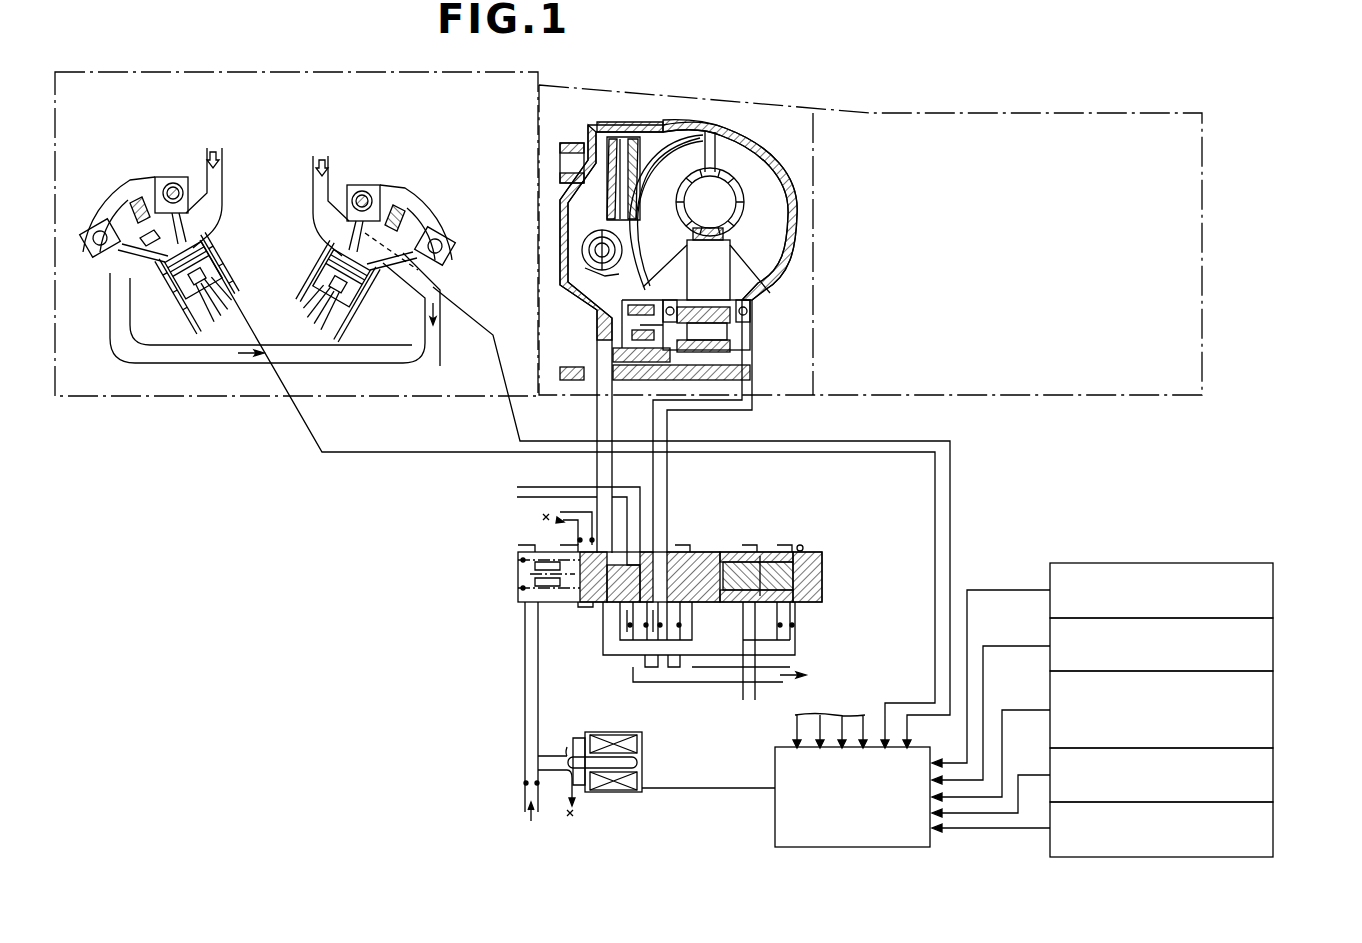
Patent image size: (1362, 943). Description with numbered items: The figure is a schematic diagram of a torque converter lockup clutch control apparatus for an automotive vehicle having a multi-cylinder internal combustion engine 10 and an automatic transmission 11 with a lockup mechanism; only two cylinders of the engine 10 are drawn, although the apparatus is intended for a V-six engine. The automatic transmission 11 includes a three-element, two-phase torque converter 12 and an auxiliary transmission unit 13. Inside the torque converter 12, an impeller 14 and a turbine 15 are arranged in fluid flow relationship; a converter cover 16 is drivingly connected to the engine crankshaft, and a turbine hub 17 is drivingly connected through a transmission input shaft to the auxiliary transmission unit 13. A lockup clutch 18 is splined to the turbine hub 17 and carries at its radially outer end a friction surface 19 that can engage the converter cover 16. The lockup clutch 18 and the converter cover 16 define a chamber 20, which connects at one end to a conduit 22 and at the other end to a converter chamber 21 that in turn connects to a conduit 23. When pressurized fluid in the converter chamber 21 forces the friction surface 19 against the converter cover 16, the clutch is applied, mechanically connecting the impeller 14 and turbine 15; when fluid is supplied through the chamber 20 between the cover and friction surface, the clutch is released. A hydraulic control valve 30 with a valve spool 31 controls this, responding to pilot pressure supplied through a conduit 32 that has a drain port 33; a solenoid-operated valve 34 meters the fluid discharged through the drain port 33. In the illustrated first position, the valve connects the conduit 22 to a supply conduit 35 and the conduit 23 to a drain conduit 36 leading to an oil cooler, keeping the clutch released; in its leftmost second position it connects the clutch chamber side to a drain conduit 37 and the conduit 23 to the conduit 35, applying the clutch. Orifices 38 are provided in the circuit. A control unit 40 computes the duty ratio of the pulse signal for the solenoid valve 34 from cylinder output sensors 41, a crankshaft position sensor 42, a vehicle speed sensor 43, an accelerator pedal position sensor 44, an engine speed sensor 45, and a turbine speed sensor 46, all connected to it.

The internal combustion engine 10 is at (338, 72).
The automatic transmission 11 is at (950, 80).
The torque converter 12 is at (758, 126).
The auxiliary transmission unit 13 is at (1113, 110).
The impeller 14 is at (776, 240).
The turbine 15 is at (668, 210).
The converter cover 16 is at (588, 126).
The turbine hub 17 is at (660, 365).
The lockup clutch 18 is at (558, 250).
The friction surface 19 is at (608, 130).
The chamber 20 is at (603, 330).
The converter chamber 21 is at (727, 202).
The conduit 22 is at (595, 415).
The conduit 23 is at (672, 488).
The hydraulic control valve 30 is at (770, 522).
The valve spool 31 is at (703, 550).
The conduit 32 is at (524, 664).
The drain port 33 is at (567, 750).
The solenoid-operated valve 34 is at (647, 762).
The conduit 35 is at (515, 490).
The drain conduit 36 is at (726, 680).
The drain conduit 37 is at (563, 523).
The orifices 38 is at (644, 658).
The control unit 40 is at (773, 813).
The cylinder output sensors 41 is at (162, 235).
The crankshaft position sensor 42 is at (1275, 594).
The vehicle speed sensor 43 is at (1275, 646).
The accelerator pedal position sensor 44 is at (1275, 708).
The engine speed sensor 45 is at (1275, 779).
The turbine speed sensor 46 is at (1275, 833).